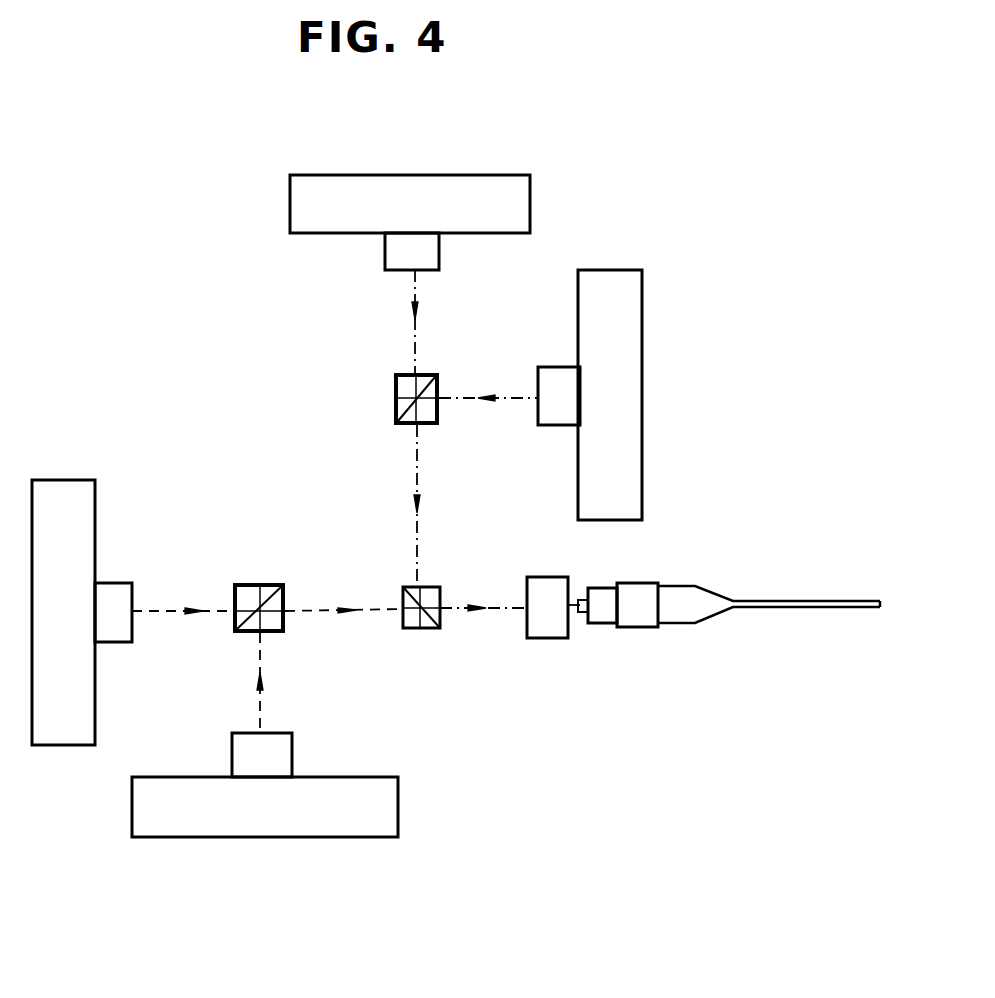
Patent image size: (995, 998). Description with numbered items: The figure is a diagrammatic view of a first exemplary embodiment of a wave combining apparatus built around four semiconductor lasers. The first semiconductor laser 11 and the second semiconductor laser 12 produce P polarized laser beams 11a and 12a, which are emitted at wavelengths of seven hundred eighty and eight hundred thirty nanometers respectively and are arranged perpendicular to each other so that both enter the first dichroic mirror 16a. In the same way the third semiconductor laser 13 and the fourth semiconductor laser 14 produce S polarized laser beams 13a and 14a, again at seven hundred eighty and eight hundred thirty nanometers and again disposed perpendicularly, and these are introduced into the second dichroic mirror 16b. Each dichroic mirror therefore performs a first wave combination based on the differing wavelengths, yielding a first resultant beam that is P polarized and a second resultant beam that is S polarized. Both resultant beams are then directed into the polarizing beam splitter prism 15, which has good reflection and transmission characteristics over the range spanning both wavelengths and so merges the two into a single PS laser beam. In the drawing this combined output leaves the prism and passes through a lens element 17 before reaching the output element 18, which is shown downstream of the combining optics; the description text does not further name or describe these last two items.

The first semiconductor laser 11 is at (190, 838).
The laser beam 11a is at (262, 705).
The second semiconductor laser 12 is at (60, 480).
The laser beam 12a is at (185, 614).
The third semiconductor laser 13 is at (612, 268).
The laser beam 13a is at (507, 392).
The fourth semiconductor laser 14 is at (532, 205).
The laser beam 14a is at (415, 297).
The polarizing beam splitter prism 15 is at (415, 630).
The first dichroic mirror 16a is at (258, 583).
The second dichroic mirror 16b is at (430, 425).
The condensing lens 17 is at (590, 640).
The optical fiber connector 18 is at (805, 598).